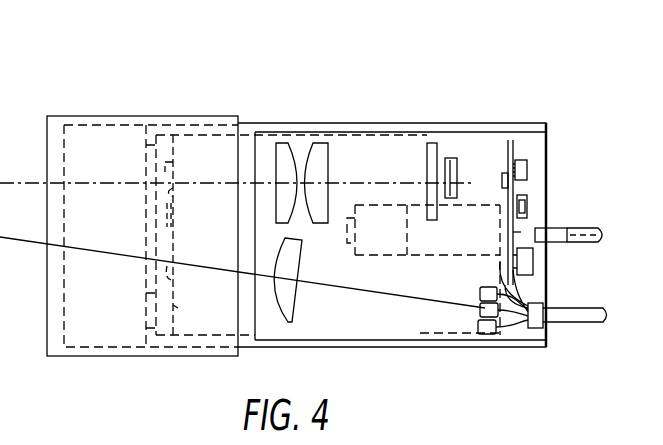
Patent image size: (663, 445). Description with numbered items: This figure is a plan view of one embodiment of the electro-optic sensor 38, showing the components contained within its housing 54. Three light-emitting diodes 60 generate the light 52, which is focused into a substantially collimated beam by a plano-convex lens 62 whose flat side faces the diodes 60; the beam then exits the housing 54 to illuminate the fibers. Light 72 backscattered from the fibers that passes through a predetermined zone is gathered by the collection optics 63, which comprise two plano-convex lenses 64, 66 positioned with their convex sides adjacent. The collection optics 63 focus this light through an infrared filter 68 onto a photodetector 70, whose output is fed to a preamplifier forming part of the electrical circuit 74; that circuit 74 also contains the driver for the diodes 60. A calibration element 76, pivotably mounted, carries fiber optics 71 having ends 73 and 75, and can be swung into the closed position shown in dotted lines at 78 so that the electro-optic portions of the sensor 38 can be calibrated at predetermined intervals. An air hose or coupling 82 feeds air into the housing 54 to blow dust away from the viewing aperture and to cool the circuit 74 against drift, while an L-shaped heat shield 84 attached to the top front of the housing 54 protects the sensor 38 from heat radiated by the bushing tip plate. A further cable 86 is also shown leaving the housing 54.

The electro-optic sensor 38 is at (552, 113).
The light 52 is at (348, 289).
The housing 54 is at (548, 150).
The light-emitting diodes 60 is at (482, 291).
The plano-convex lens 62 is at (287, 318).
The collection optics 63 is at (329, 157).
The plano-convex lens 64 is at (289, 153).
The plano-convex lens 66 is at (310, 152).
The infrared filter 68 is at (426, 150).
The photodetector 70 is at (449, 158).
The fiber optics 71 is at (173, 215).
The backscattered light 72 is at (70, 182).
The end of fiber optics 73 is at (173, 281).
The electrical circuit 74 is at (527, 192).
The end of fiber optics 75 is at (175, 188).
The calibration element 76 is at (155, 296).
The closed position of calibration element 78 is at (178, 308).
The air hose or coupling 82 is at (600, 228).
The L-shaped heat shield 84 is at (128, 117).
The cable 86 is at (585, 308).